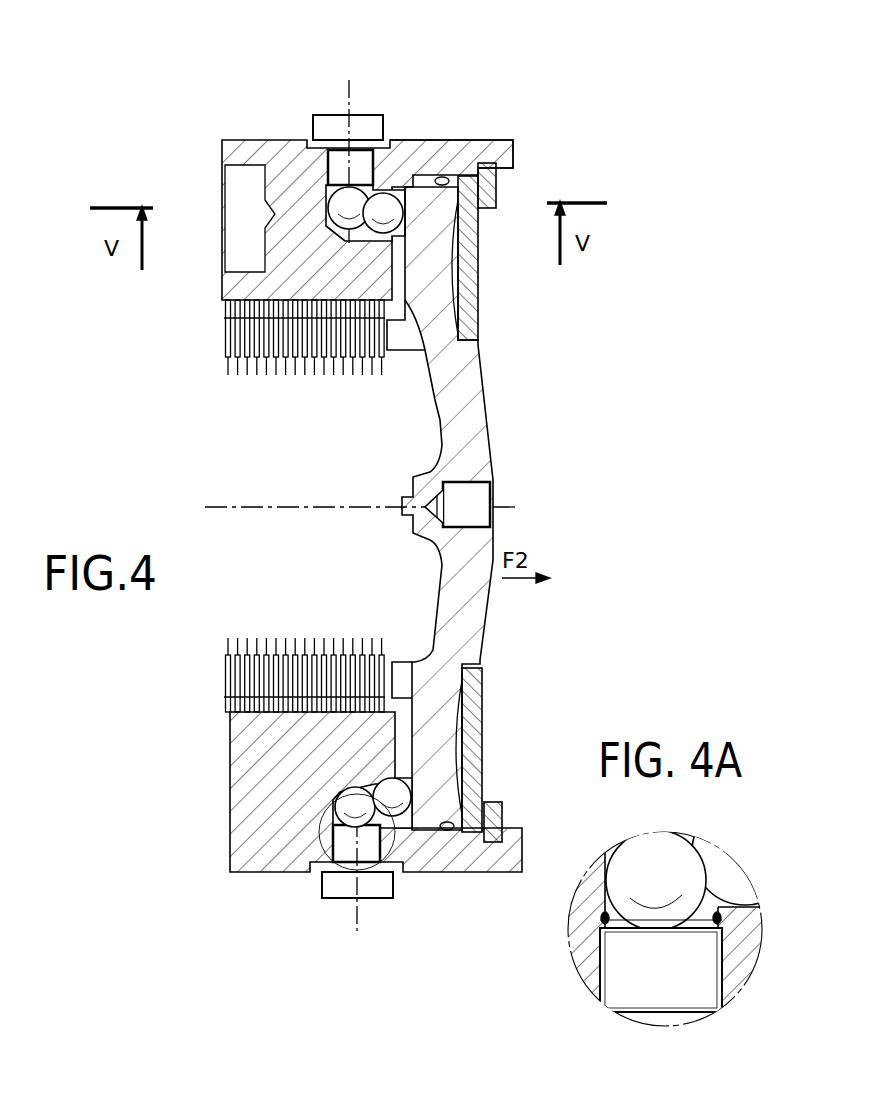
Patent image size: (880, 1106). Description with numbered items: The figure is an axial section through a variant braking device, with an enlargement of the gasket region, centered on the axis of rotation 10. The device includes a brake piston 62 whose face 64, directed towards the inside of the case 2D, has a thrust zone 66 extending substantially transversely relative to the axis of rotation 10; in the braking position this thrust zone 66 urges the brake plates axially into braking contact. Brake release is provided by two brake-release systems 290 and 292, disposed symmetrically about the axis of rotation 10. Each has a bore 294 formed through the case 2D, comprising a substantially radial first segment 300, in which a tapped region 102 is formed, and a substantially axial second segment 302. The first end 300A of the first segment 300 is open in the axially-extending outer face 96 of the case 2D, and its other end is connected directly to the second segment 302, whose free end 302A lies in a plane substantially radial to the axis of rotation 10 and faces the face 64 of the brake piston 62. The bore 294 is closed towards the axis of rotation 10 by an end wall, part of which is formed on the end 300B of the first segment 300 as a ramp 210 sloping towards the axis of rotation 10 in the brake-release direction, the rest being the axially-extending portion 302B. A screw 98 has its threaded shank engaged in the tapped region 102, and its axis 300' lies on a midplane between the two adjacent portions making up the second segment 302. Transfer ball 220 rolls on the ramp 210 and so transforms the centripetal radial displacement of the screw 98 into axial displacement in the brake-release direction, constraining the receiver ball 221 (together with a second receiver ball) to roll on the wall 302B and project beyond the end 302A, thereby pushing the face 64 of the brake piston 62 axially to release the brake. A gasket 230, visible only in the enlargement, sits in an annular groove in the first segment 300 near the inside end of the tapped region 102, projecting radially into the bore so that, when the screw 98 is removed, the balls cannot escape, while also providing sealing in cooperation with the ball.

In FIG. 4, the axis of rotation 10 is at (290, 507).
In FIG. 4, the brake piston 62 is at (470, 660).
In FIG. 4, the face of the brake piston 64 is at (458, 702).
In FIG. 4, the thrust zone 66 is at (397, 340).
In FIG. 4, the axially-extending outer face of the case 96 is at (500, 137).
In FIG. 4, the screw 98 is at (368, 883).
In FIG. 4, the tapped region 102 is at (317, 172).
In FIG. 4, the ramp 210 is at (360, 788).
In FIG. 4, the transfer ball 220 is at (338, 811).
In FIG. 4A, the transfer ball 220 is at (643, 858).
In FIG. 4, the receiver ball 221 is at (397, 826).
In FIG. 4, the gasket 230 is at (288, 846).
In FIG. 4A, the gasket 230 is at (600, 935).
In FIG. 4, the brake-release system 290 is at (389, 96).
In FIG. 4, the brake-release system 292 is at (312, 923).
In FIG. 4, the bore 294 is at (312, 201).
In FIG. 4, the first segment of the bore 300 is at (278, 226).
In FIG. 4, the axis of the first segment 300' is at (382, 129).
In FIG. 4, the first end of the first segment 300A is at (307, 142).
In FIG. 4, the end of the first segment 300B is at (316, 792).
In FIG. 4, the second segment of the bore 302 is at (372, 232).
In FIG. 4, the free end of the second segment 302A is at (398, 783).
In FIG. 4, the axially-extending portion of the end wall 302B is at (350, 645).
In FIG. 4, the case 2D is at (257, 853).